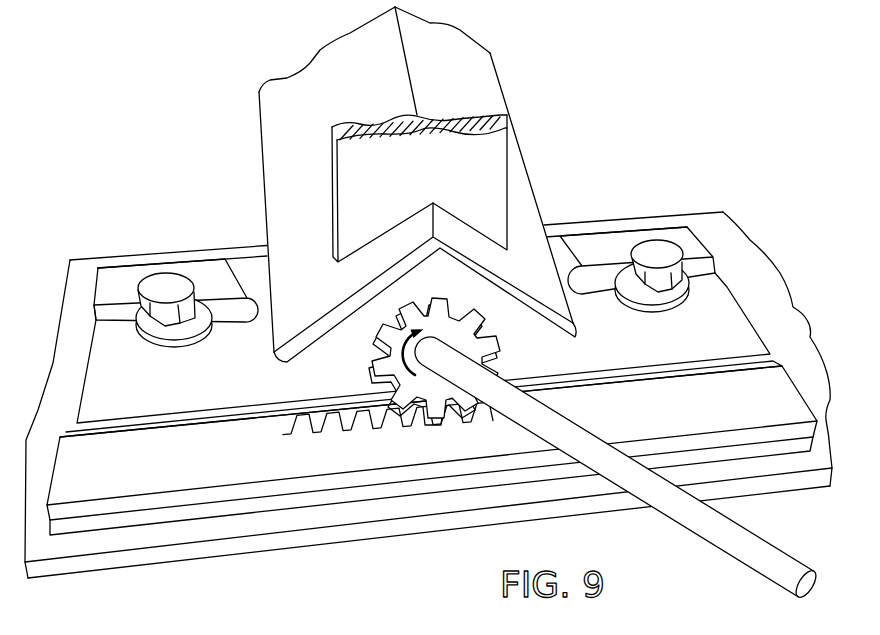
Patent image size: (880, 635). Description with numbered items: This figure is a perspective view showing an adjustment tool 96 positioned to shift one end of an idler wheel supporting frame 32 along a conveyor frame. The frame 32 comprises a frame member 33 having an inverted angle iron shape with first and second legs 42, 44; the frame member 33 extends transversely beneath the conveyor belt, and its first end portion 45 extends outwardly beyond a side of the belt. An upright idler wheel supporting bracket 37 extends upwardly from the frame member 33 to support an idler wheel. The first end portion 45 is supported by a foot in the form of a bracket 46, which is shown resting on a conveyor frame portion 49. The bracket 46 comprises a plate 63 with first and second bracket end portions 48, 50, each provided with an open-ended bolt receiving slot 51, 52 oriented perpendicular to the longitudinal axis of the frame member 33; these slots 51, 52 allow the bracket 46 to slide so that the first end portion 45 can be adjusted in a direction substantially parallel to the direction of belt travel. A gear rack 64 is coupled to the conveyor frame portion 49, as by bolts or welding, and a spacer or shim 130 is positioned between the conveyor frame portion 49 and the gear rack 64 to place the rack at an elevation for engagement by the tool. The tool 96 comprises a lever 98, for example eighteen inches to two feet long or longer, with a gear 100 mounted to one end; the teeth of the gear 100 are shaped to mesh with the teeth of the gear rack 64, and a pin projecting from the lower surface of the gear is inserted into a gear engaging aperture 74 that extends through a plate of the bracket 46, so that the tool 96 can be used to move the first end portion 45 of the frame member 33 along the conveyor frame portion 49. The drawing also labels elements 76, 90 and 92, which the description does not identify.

The idler wheel supporting frame 32 is at (440, 59).
The frame member 33 is at (493, 95).
The idler wheel supporting bracket 37 is at (408, 172).
The first leg 42 is at (472, 65).
The second leg 44 is at (332, 72).
The first end portion 45 is at (538, 210).
The bracket 46 is at (246, 249).
The first bracket end portion 48 is at (707, 363).
The conveyor frame portion 49 is at (273, 568).
The second bracket end portion 50 is at (150, 418).
The bolt receiving slot 51 is at (600, 282).
The bolt receiving slot 52 is at (243, 317).
The plate 63 is at (500, 315).
The gear rack 64 is at (380, 408).
The gear engaging aperture 74 is at (438, 372).
The slide platform 76 is at (93, 328).
The right bolt 90 is at (658, 257).
The left bolt 92 is at (166, 293).
The tool 96 is at (797, 556).
The lever 98 is at (760, 550).
The gear 100 is at (367, 358).
The spacer or shim 130 is at (134, 520).